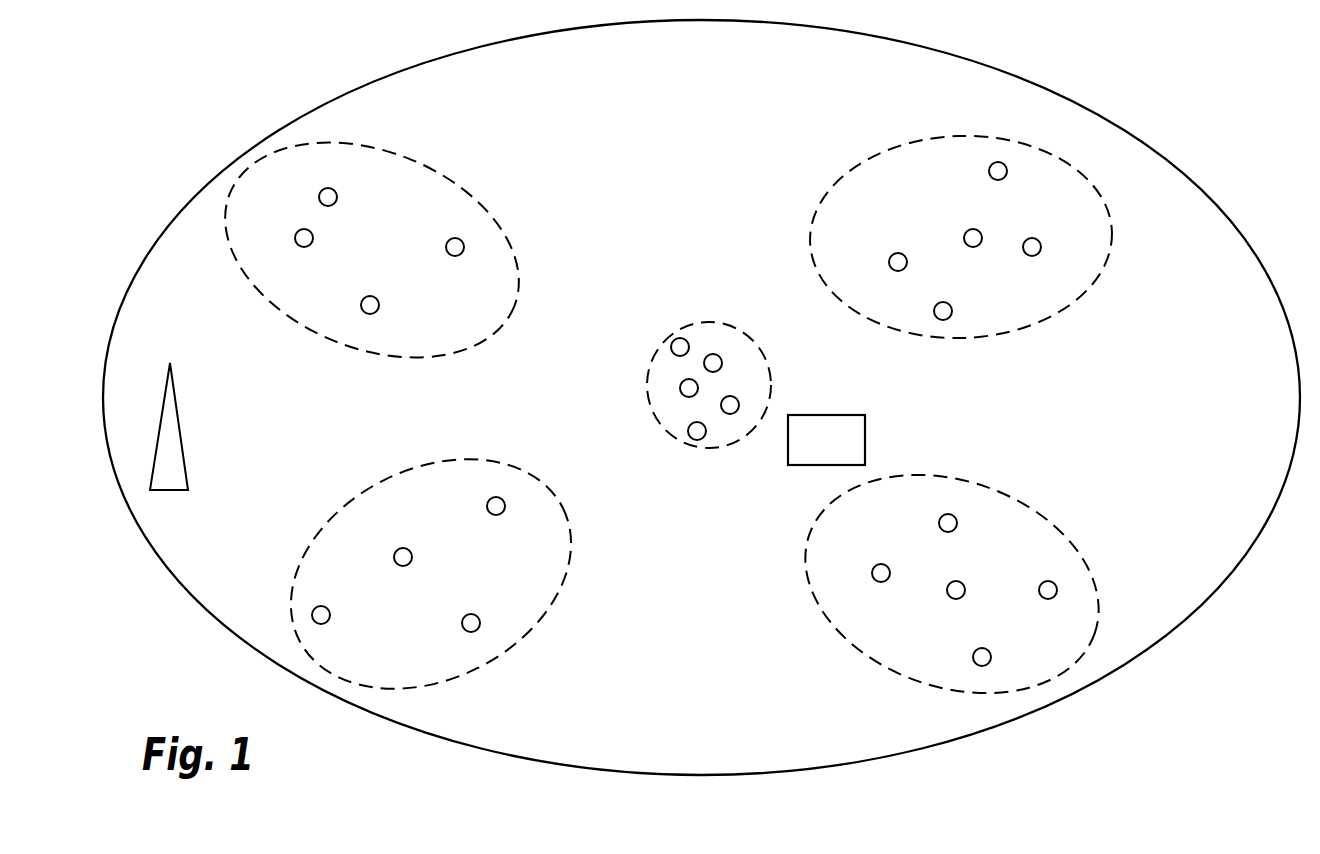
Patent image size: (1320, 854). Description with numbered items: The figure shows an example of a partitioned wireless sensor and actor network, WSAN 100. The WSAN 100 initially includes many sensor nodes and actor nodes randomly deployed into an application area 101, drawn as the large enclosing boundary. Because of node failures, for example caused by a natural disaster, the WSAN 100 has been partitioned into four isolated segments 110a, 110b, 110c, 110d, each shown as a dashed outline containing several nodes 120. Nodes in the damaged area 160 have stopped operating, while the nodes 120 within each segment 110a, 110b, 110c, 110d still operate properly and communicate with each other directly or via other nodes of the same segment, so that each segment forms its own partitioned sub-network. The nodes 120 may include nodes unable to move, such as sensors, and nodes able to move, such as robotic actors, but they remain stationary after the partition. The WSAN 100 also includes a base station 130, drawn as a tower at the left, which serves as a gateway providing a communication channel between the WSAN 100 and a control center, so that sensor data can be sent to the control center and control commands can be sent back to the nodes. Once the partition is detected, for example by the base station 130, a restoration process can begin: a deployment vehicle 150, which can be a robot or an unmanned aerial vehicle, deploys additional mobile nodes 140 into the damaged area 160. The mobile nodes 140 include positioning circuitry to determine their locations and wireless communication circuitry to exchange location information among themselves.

The wireless sensor and actor network (WSAN) 100 is at (719, 122).
The application area 101 is at (1040, 87).
The segment 110a is at (452, 172).
The segment 110b is at (817, 218).
The segment 110c is at (462, 458).
The segment 110d is at (806, 556).
The nodes 120 is at (463, 243).
The base station 130 is at (182, 437).
The mobile nodes 140 is at (684, 338).
The deployment vehicle 150 is at (858, 415).
The damaged area 160 is at (672, 640).